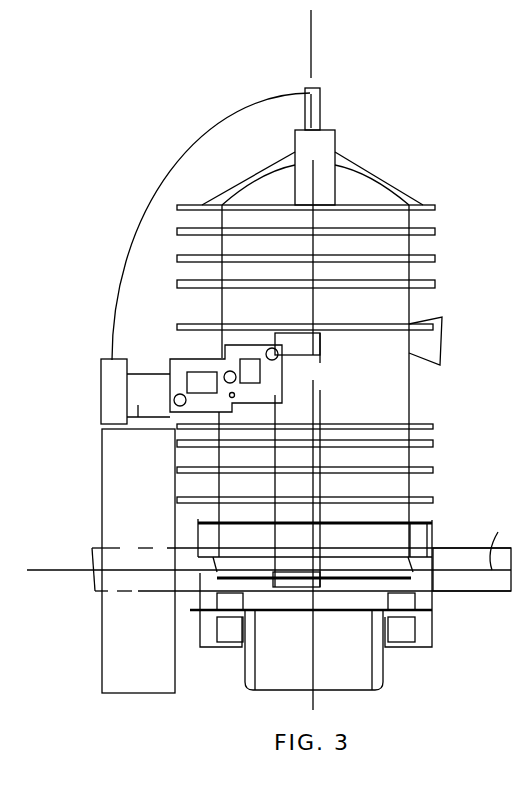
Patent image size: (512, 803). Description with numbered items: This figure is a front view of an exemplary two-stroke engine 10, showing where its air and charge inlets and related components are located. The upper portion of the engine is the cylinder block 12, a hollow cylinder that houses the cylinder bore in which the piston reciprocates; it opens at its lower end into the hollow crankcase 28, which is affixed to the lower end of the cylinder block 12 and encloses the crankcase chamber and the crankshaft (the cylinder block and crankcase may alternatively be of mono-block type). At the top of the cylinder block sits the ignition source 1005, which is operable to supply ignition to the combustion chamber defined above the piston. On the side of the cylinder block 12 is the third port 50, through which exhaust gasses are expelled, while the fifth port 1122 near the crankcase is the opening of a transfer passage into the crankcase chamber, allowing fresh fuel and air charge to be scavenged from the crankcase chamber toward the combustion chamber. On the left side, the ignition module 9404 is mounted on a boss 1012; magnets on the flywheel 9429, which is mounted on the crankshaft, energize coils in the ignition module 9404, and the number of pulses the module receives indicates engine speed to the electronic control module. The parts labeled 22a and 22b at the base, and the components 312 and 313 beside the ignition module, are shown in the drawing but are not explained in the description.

The two stroke engine 10 is at (232, 107).
The ignition source 1005 is at (320, 142).
The cylinder block 12 is at (403, 247).
The third port 50 is at (412, 343).
The circuit board component 312 is at (200, 378).
The circuit board component 313 is at (253, 370).
The ignition module 9404 is at (115, 393).
The boss 1012 is at (138, 405).
The flywheel 9429 is at (112, 477).
The mounting plate left 22a is at (117, 560).
The mounting plate right 22b is at (443, 555).
The fifth port 1122 is at (297, 585).
The crankcase 28 is at (362, 683).